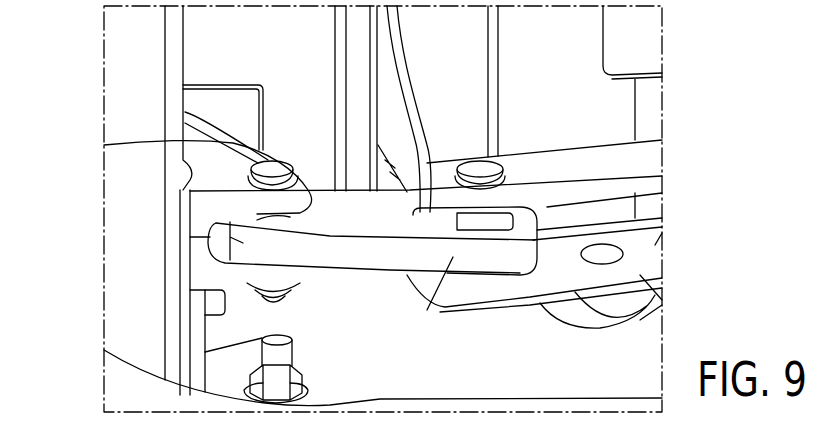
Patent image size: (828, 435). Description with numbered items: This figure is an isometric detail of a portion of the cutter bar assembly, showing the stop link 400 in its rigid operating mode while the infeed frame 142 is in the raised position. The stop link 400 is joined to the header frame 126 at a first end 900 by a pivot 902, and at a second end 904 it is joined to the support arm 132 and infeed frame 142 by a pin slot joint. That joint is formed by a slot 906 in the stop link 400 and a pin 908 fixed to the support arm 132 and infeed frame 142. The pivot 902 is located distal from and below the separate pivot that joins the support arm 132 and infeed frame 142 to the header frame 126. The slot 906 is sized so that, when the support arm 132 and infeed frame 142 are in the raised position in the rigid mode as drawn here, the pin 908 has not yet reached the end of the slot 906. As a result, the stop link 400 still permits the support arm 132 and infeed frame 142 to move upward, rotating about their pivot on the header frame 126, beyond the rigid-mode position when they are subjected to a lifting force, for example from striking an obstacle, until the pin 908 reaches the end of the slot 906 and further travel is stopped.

The header frame 126 is at (123, 188).
The pivot 902 is at (130, 144).
The first end 900 is at (228, 229).
The stop link 400 is at (327, 258).
The slot 906 is at (413, 213).
The second end 904 is at (447, 270).
The pin 908 is at (470, 162).
The support arm 132 is at (605, 260).
The infeed frame 142 is at (653, 246).